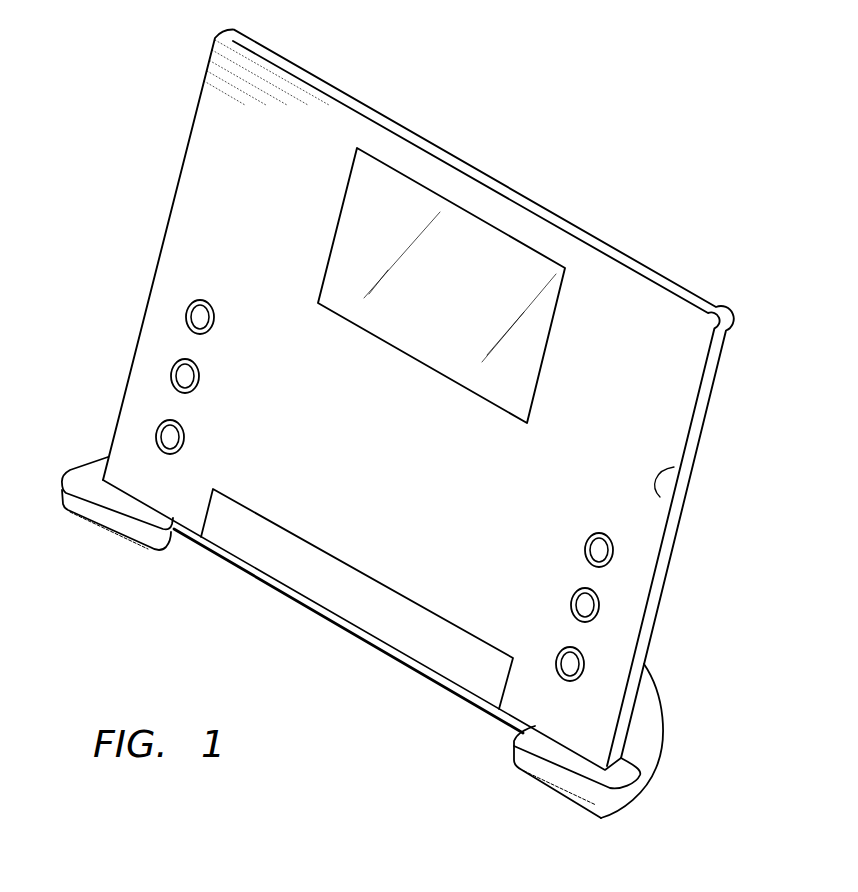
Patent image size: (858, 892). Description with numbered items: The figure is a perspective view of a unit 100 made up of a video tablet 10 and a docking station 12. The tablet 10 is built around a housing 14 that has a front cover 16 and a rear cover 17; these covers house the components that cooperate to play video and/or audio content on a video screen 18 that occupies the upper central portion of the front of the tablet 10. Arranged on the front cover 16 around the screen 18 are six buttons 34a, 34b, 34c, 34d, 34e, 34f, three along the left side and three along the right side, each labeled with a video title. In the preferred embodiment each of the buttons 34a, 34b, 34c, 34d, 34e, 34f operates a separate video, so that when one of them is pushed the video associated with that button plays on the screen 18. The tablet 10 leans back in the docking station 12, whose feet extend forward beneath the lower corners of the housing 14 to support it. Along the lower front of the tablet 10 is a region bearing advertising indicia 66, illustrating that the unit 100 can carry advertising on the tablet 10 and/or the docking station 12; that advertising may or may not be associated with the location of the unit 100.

The unit 100 is at (776, 187).
The video tablet 10 is at (688, 352).
The docking station 12 is at (640, 738).
The housing 14 is at (700, 446).
The front cover 16 is at (660, 497).
The rear cover 17 is at (714, 345).
The video screen 18 is at (475, 283).
The button 34a is at (192, 316).
The button 34b is at (178, 376).
The button 34c is at (163, 437).
The button 34d is at (606, 549).
The button 34e is at (592, 605).
The button 34f is at (577, 664).
The advertising indicia 66 is at (466, 663).